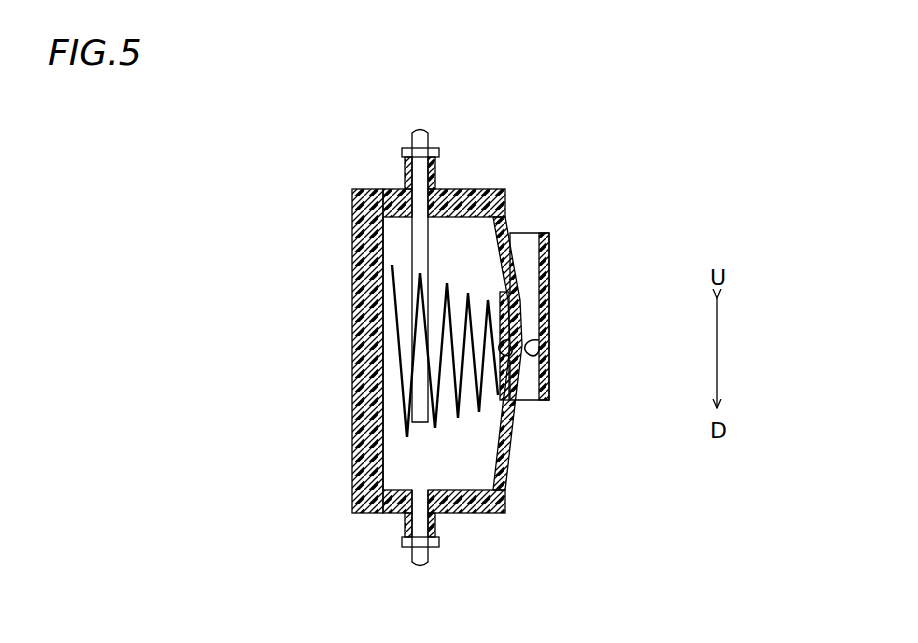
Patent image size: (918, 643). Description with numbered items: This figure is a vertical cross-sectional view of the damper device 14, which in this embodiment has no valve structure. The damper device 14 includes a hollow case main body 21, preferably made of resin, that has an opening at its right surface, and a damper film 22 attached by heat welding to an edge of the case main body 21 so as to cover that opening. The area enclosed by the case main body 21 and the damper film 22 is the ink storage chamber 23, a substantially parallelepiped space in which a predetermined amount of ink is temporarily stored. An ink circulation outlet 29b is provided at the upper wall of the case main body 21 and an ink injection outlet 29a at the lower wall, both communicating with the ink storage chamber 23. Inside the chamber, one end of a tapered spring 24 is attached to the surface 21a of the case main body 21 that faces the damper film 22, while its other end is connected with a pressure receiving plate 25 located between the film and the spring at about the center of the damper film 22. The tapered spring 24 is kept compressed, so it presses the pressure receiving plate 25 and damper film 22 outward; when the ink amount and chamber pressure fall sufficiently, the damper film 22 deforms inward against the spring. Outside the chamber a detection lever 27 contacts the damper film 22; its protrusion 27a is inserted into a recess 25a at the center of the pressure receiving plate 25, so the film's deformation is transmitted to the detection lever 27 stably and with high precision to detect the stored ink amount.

The damper device 14 is at (637, 159).
The case main body 21 is at (345, 207).
The surface of the case main body 21a is at (386, 241).
The damper film 22 is at (503, 197).
The ink storage chamber 23 is at (398, 458).
The tapered spring 24 is at (397, 352).
The pressure receiving plate 25 is at (523, 398).
The recess 25a is at (501, 373).
The detection lever 27 is at (545, 290).
The protrusion 27a is at (532, 348).
The ink injection outlet 29a is at (420, 522).
The ink circulation outlet 29b is at (420, 171).